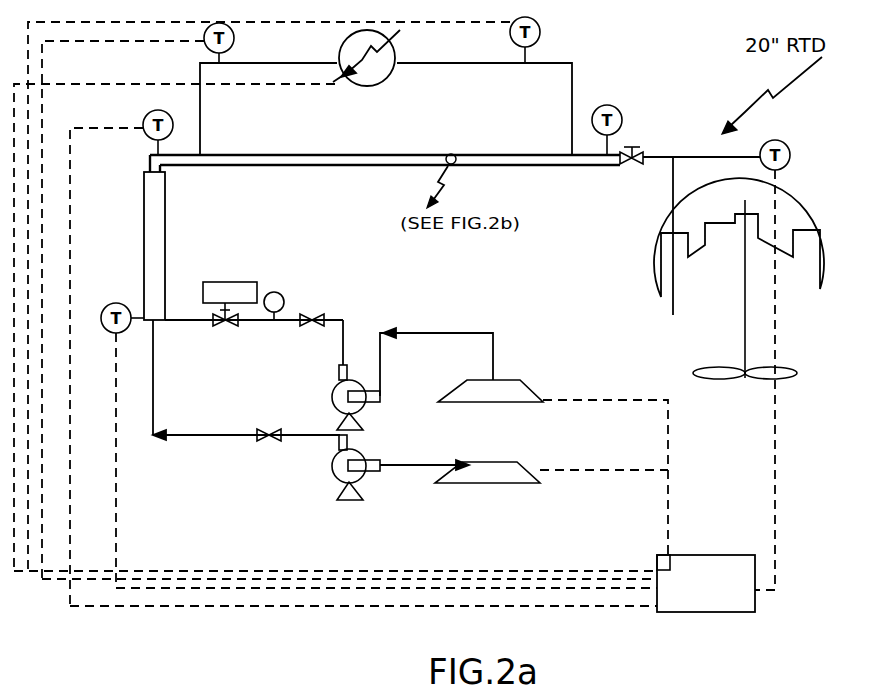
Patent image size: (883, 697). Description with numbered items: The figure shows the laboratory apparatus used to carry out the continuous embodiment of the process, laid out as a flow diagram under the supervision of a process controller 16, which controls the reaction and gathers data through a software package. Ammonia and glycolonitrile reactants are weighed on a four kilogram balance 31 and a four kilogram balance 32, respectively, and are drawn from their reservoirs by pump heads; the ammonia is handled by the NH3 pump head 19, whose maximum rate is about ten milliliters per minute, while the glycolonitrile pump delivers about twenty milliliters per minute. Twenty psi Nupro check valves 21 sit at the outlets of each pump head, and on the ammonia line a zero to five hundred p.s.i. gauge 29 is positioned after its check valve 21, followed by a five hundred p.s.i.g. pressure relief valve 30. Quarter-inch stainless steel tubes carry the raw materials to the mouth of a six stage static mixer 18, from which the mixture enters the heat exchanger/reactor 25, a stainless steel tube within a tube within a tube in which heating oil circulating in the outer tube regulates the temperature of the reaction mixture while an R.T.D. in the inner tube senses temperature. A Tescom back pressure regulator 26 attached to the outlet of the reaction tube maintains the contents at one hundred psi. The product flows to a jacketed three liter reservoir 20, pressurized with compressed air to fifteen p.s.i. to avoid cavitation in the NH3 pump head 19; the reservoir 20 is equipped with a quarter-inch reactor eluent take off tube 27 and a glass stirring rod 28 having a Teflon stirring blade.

The process controller 16 is at (706, 597).
The static mixer 18 is at (169, 246).
The NH3 pump head 19 is at (361, 397).
The reservoir 20 is at (725, 254).
The check valves 21 is at (292, 366).
The heat exchanger/reactor 25 is at (386, 92).
The back pressure regulator 26 is at (640, 139).
The reactor eluent take off tube 27 is at (658, 236).
The glass stirring rod 28 is at (745, 280).
The gauge 29 is at (277, 295).
The pressure relief valve 30 is at (230, 290).
The balance 31 is at (490, 393).
The balance 32 is at (510, 473).